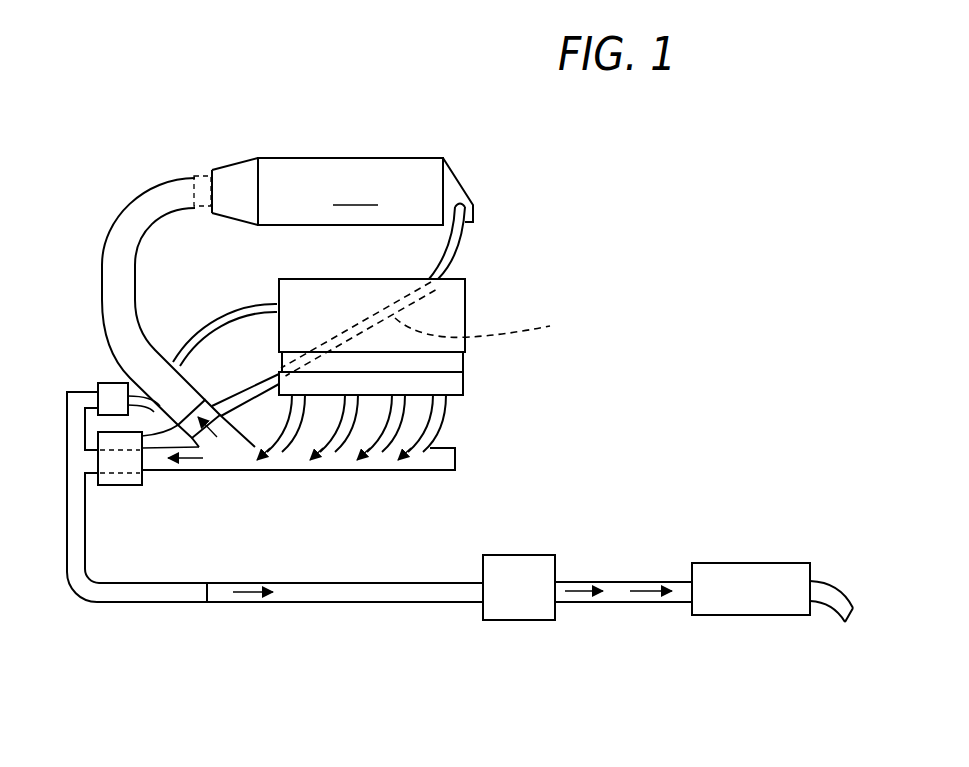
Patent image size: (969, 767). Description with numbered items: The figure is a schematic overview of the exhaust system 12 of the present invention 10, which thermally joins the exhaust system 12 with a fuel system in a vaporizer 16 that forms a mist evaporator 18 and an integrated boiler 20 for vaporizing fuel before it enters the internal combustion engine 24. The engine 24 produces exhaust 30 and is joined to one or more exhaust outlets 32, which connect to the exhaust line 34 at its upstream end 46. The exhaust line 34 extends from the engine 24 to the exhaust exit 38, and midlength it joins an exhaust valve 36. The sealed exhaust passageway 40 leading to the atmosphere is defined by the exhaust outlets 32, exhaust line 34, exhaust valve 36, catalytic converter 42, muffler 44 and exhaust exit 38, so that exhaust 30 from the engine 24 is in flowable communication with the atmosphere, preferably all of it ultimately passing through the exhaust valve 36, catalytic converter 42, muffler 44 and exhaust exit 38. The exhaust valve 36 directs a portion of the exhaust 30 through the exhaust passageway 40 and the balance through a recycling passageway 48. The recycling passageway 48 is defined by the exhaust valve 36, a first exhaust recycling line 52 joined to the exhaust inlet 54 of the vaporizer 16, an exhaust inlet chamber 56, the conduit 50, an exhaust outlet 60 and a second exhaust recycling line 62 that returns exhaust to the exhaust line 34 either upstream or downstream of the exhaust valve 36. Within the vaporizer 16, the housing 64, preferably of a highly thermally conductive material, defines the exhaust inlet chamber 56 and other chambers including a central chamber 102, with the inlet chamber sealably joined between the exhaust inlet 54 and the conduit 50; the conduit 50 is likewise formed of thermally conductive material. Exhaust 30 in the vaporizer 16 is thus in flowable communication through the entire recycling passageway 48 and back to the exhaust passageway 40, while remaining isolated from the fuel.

The present invention 10 is at (595, 168).
The exhaust system 12 is at (613, 232).
The vaporizer 16 is at (357, 100).
The mist evaporator 18 is at (302, 157).
The boiler 20 is at (280, 157).
The internal combustion engine 24 is at (468, 285).
The exhaust 30 is at (213, 428).
The exhaust outlets 32 is at (450, 410).
The exhaust line 34 is at (327, 483).
The exhaust valve 36 is at (228, 473).
The exhaust exit 38 is at (843, 593).
The exhaust passageway 40 is at (387, 472).
The catalytic converter 42 is at (505, 598).
The muffler 44 is at (725, 597).
The upstream end 46 is at (458, 447).
The recycling passageway 48 is at (118, 248).
The conduit 50 is at (462, 196).
The first exhaust recycling line 52 is at (128, 222).
The exhaust inlet 54 is at (193, 175).
The exhaust inlet chamber 56 is at (238, 170).
The exhaust outlet 60 is at (463, 203).
The second exhaust recycling line 62 is at (455, 262).
The housing 64 is at (336, 158).
The central chamber 102 is at (350, 191).